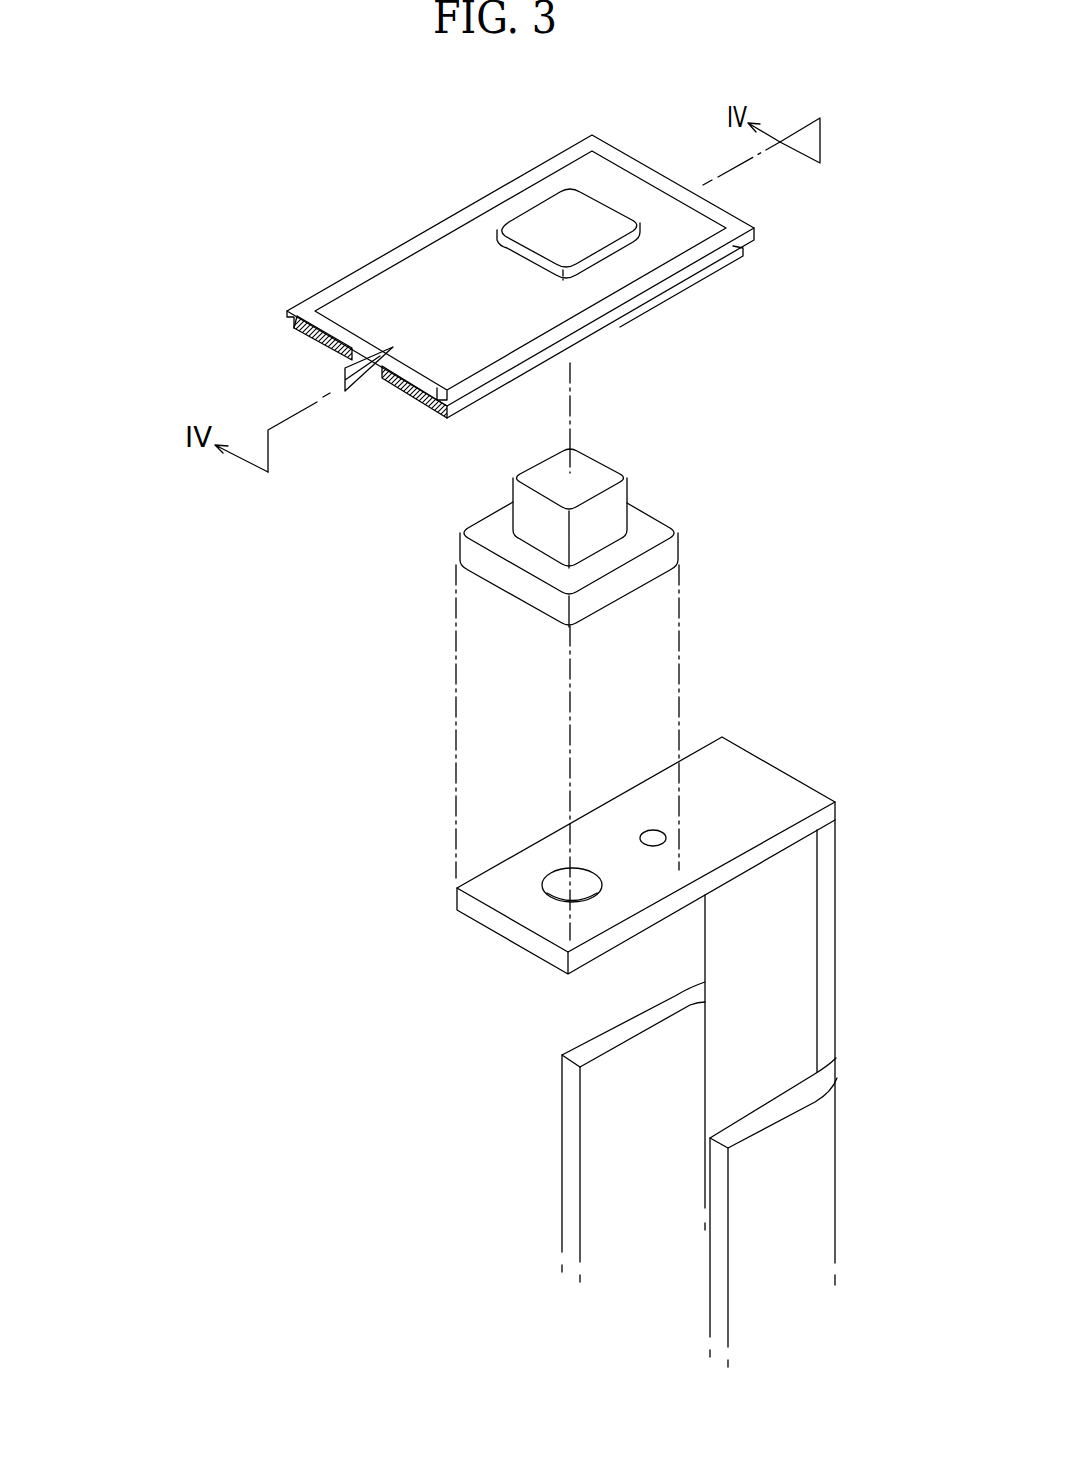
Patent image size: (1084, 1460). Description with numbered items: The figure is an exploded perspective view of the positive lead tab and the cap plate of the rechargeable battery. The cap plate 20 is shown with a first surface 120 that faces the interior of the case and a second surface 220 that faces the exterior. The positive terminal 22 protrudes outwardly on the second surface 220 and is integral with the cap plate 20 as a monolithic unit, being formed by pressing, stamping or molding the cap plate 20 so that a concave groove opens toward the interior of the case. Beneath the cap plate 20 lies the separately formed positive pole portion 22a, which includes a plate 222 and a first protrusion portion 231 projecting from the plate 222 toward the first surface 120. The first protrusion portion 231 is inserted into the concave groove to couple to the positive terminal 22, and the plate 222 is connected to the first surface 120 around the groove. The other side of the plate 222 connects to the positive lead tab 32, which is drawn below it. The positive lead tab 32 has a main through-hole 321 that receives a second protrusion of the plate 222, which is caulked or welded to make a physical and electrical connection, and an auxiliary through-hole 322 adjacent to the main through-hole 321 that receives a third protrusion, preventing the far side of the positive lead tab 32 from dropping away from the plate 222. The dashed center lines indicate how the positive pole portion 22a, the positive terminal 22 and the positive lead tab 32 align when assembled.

The cap plate 20 is at (193, 268).
The second surface 220 is at (350, 310).
The first surface 120 is at (297, 336).
The positive terminal 22 is at (550, 223).
The positive pole portion 22a is at (793, 502).
The first protrusion portion 231 is at (597, 475).
The plate 222 is at (655, 530).
The positive lead tab 32 is at (768, 775).
The main through-hole 321 is at (553, 882).
The auxiliary through-hole 322 is at (653, 832).